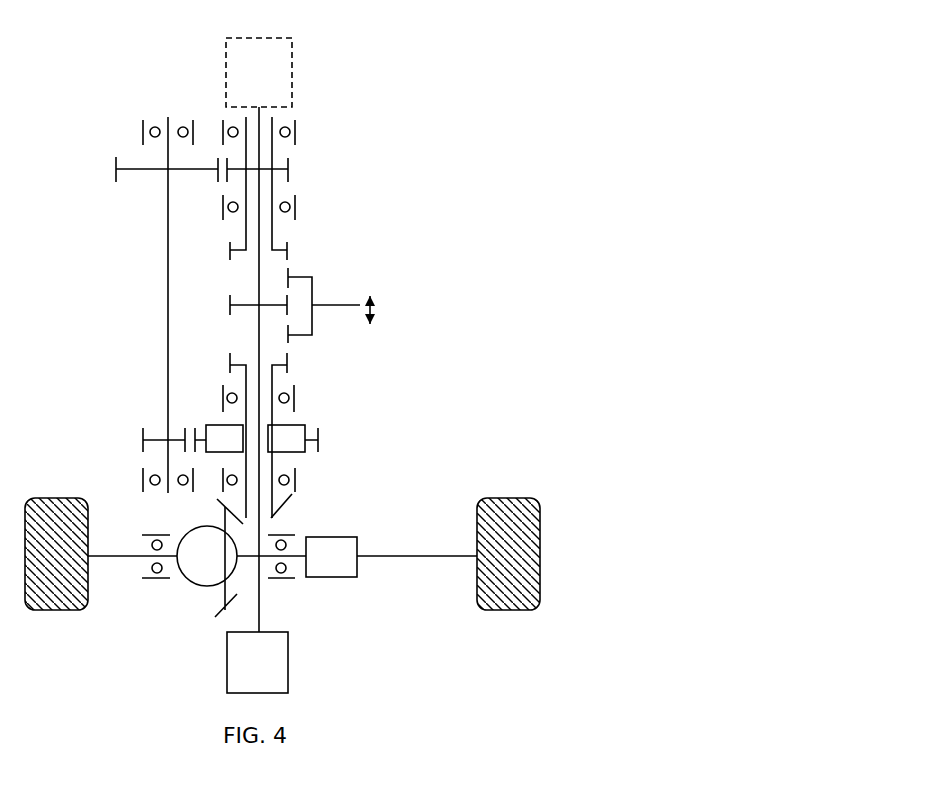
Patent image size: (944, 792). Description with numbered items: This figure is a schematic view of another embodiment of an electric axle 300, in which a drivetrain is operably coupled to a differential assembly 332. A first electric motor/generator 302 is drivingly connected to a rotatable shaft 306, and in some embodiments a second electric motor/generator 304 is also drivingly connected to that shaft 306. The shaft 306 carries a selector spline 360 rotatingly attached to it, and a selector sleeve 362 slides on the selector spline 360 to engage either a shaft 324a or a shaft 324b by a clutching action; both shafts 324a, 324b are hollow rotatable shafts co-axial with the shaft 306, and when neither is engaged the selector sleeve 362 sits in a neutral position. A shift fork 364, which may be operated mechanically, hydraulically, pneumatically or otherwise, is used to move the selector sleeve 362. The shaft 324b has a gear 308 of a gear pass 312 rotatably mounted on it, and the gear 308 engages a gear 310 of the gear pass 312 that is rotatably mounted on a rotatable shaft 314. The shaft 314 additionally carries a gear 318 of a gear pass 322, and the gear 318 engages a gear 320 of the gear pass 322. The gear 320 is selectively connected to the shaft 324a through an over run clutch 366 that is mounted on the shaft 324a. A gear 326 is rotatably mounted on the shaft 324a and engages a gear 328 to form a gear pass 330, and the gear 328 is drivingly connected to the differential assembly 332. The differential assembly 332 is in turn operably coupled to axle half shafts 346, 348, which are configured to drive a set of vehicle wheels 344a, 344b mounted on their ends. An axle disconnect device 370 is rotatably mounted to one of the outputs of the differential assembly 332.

The electric axle 300 is at (529, 74).
The first electric motor/generator 302 is at (274, 672).
The second electric motor/generator 304 is at (276, 84).
The rotatable shaft 306 is at (257, 348).
The gear 308 is at (288, 164).
The gear 310 is at (116, 168).
The gear pass 312 is at (388, 162).
The rotatable shaft 314 is at (168, 262).
The gear 318 is at (143, 436).
The gear 320 is at (320, 434).
The gear pass 322 is at (421, 442).
The shaft 324a is at (243, 388).
The shaft 324b is at (245, 237).
The gear 326 is at (230, 498).
The gear 328 is at (218, 612).
The gear pass 330 is at (314, 510).
The differential assembly 332 is at (223, 566).
The vehicle wheel 344a is at (77, 645).
The vehicle wheel 344b is at (534, 644).
The axle half shaft 346 is at (105, 557).
The axle half shaft 348 is at (415, 557).
The selector spline 360 is at (205, 300).
The selector sleeve 362 is at (315, 337).
The shift fork 364 is at (326, 303).
The over run clutch 366 is at (303, 425).
The axle disconnect device 370 is at (348, 567).